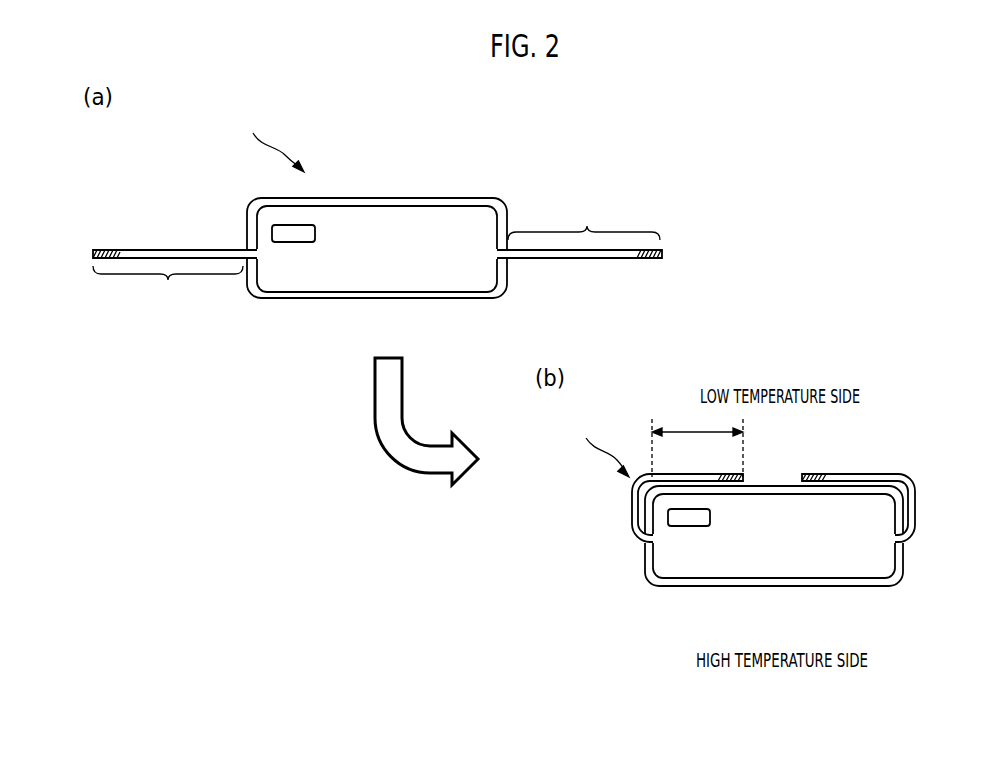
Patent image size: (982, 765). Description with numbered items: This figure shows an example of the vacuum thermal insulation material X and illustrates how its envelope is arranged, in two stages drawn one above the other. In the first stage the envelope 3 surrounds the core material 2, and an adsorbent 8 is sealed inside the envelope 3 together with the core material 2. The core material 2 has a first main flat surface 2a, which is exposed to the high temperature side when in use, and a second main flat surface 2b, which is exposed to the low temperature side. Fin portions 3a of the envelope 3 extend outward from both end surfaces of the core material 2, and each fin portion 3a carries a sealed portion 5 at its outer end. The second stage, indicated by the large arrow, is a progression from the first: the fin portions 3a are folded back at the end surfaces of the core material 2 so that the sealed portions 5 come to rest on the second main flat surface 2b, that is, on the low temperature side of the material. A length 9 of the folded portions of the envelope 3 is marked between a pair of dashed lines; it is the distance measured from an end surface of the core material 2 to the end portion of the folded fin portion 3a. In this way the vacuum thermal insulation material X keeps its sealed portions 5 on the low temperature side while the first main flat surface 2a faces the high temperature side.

The vacuum thermal insulation material X is at (433, 295).
The core material 2 is at (466, 222).
The first main flat surface 2a is at (410, 292).
The second main flat surface 2b is at (403, 208).
The envelope 3 is at (506, 292).
The fin portion 3a is at (921, 447).
The sealed portion 5 is at (645, 259).
The adsorbent 8 is at (287, 233).
The length of the folded portions 9 is at (697, 443).